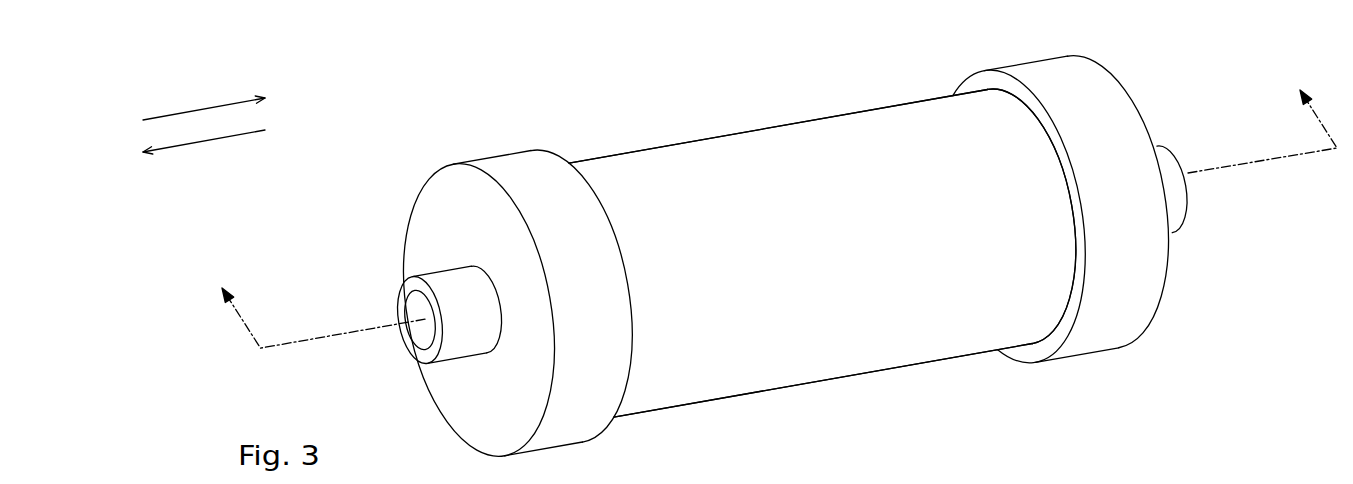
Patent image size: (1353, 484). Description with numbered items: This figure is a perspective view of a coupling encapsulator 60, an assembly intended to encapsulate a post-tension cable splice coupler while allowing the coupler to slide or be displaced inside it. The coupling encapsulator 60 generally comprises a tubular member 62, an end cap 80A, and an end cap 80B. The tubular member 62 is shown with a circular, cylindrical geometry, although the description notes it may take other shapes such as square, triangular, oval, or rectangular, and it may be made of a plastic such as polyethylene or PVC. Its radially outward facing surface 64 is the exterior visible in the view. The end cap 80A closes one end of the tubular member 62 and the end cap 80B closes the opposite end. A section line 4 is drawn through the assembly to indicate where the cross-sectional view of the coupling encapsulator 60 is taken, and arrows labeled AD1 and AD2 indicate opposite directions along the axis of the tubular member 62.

The coupling encapsulator 60 is at (438, 65).
The tubular member 62 is at (782, 153).
The radially outward facing surface 64 is at (652, 170).
The end cap 80A is at (510, 160).
The end cap 80B is at (1062, 87).
The line 4- 4 is at (773, 206).
The first axial direction AD1 is at (193, 107).
The second axial direction AD2 is at (213, 138).